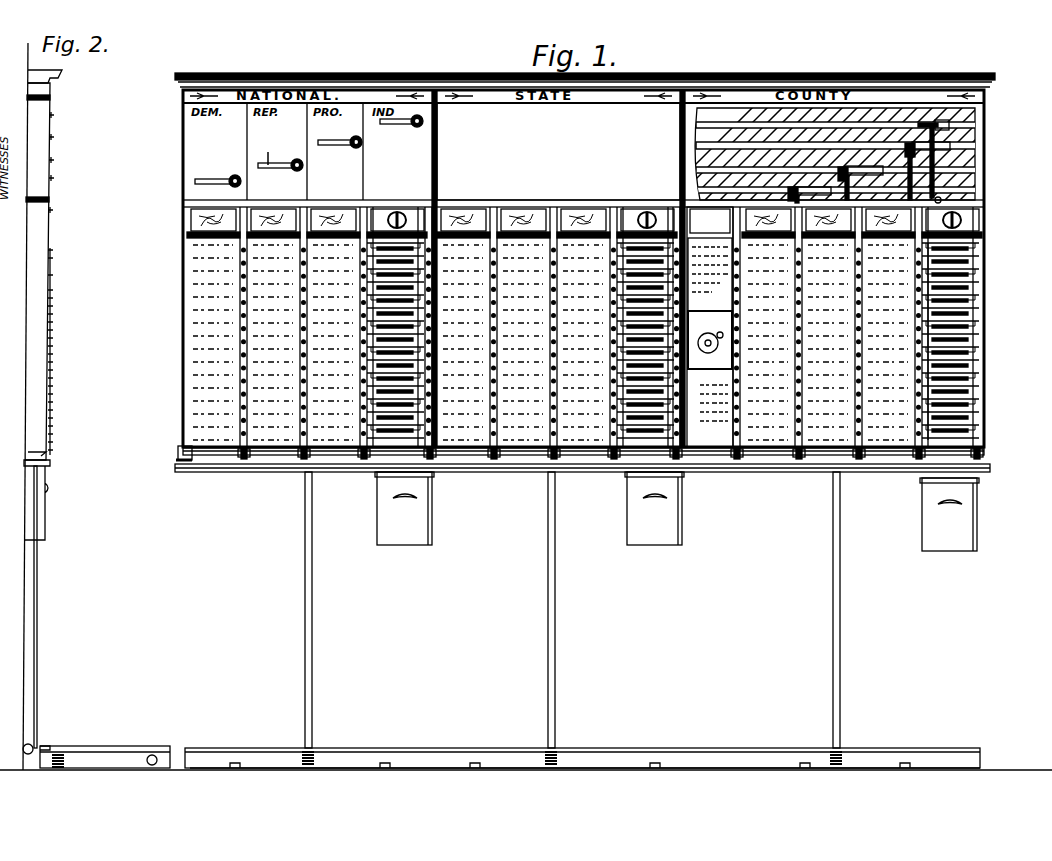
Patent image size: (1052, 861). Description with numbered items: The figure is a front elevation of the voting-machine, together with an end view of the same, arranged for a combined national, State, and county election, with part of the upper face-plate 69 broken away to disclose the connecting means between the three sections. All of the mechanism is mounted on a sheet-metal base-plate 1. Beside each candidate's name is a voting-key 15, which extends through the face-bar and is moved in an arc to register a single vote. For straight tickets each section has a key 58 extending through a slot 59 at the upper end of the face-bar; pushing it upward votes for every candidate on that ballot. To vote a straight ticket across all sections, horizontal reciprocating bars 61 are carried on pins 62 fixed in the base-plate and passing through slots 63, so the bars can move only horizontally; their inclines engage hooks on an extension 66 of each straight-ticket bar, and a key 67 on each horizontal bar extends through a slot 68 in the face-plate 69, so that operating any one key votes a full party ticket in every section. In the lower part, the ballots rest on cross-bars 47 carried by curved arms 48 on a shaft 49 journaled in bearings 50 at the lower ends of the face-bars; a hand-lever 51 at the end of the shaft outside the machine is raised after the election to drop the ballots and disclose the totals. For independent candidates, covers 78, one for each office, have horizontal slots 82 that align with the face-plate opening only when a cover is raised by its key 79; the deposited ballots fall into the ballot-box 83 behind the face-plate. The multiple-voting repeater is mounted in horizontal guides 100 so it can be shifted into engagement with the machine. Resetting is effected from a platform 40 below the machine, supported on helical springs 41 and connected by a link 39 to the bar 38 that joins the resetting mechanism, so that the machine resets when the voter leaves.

In FIG. 1, the base-plate 1 is at (985, 157).
In FIG. 2, the voting-key 15 is at (52, 258).
In FIG. 1, the bar 38 is at (280, 464).
In FIG. 1, the link 39 is at (312, 582).
In FIG. 2, the link 39 is at (38, 632).
In FIG. 1, the platform 40 is at (240, 745).
In FIG. 2, the platform 40 is at (128, 745).
In FIG. 1, the helical springs 41 is at (314, 750).
In FIG. 2, the helical springs 41 is at (65, 752).
In FIG. 1, the cross-bars 47 is at (225, 448).
In FIG. 1, the curved arms 48 is at (304, 460).
In FIG. 1, the shaft 49 is at (210, 452).
In FIG. 1, the bearings 50 is at (176, 462).
In FIG. 1, the hand-lever 51 is at (178, 449).
In FIG. 1, the key 58 is at (437, 200).
In FIG. 2, the key 58 is at (52, 210).
In FIG. 1, the slot 59 is at (435, 195).
In FIG. 1, the horizontal reciprocating bars 61 is at (950, 125).
In FIG. 1, the pins 62 is at (932, 126).
In FIG. 1, the slots 63 is at (950, 146).
In FIG. 1, the extension 66 is at (960, 193).
In FIG. 1, the key 67 is at (379, 153).
In FIG. 2, the key 67 is at (52, 178).
In FIG. 1, the slot 68 is at (271, 150).
In FIG. 1, the face-plate 69 is at (558, 151).
In FIG. 2, the face-plate 69 is at (52, 147).
In FIG. 1, the covers 78 is at (972, 410).
In FIG. 1, the key 79 is at (975, 437).
In FIG. 1, the horizontal slots 82 is at (638, 438).
In FIG. 1, the ballot-box 83 is at (418, 545).
In FIG. 1, the horizontal guides 100 is at (703, 372).